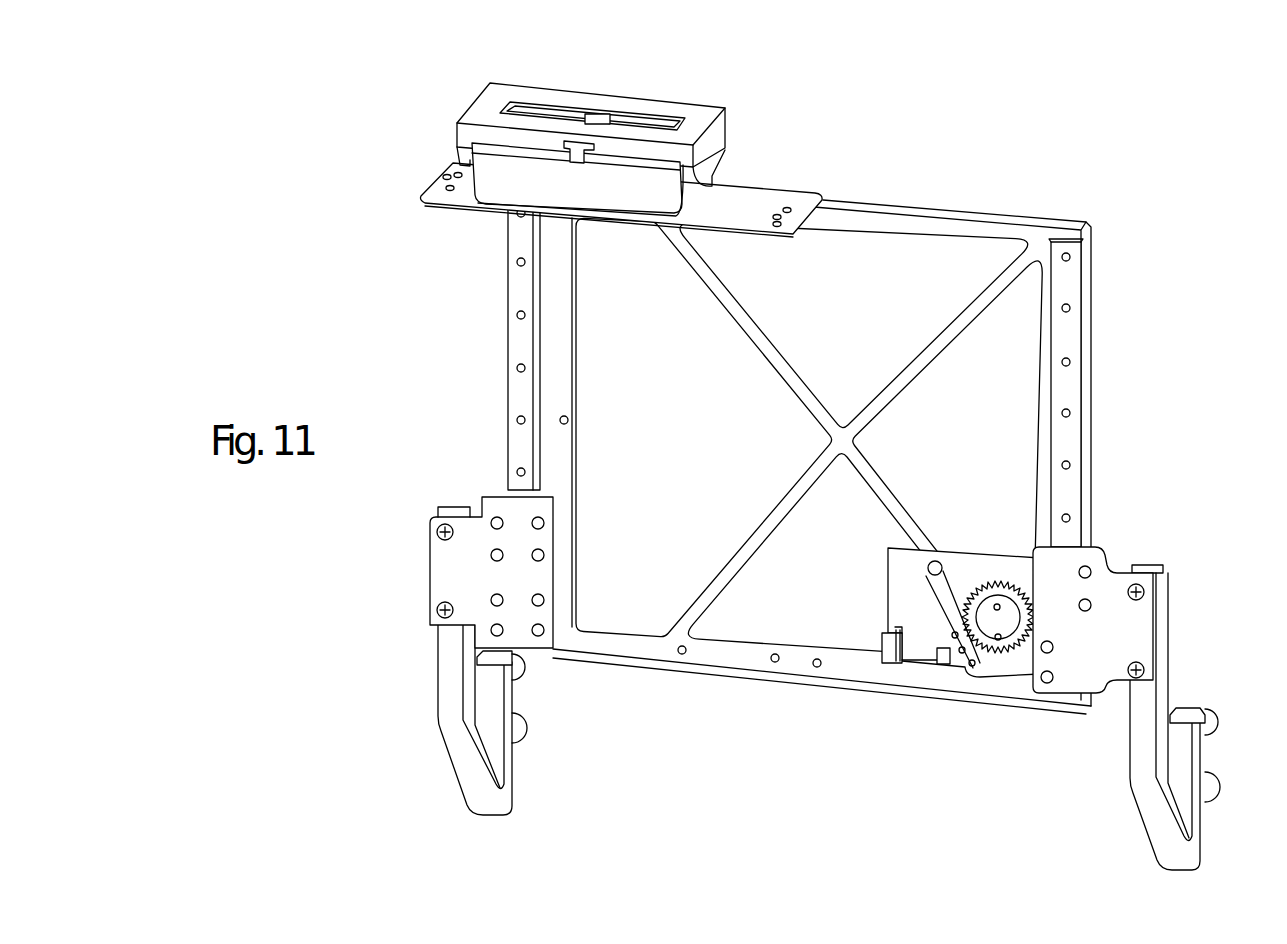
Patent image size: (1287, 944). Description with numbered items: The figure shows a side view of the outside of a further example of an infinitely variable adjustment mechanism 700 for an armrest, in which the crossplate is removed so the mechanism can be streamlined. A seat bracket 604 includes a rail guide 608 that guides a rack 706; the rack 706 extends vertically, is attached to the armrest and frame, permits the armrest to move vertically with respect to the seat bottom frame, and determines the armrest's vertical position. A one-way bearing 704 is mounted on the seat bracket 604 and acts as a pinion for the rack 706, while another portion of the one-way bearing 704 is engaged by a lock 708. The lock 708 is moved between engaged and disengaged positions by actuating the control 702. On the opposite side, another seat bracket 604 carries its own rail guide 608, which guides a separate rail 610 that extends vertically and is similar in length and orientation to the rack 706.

The infinitely variable adjustment mechanism 700 is at (1133, 144).
The control 702 is at (682, 108).
The one-way bearing 704 is at (990, 583).
The rack 706 is at (1057, 462).
The lock 708 is at (932, 615).
The seat bracket 604 is at (502, 808).
The rail guide 608 is at (573, 463).
The rail 610 is at (509, 387).